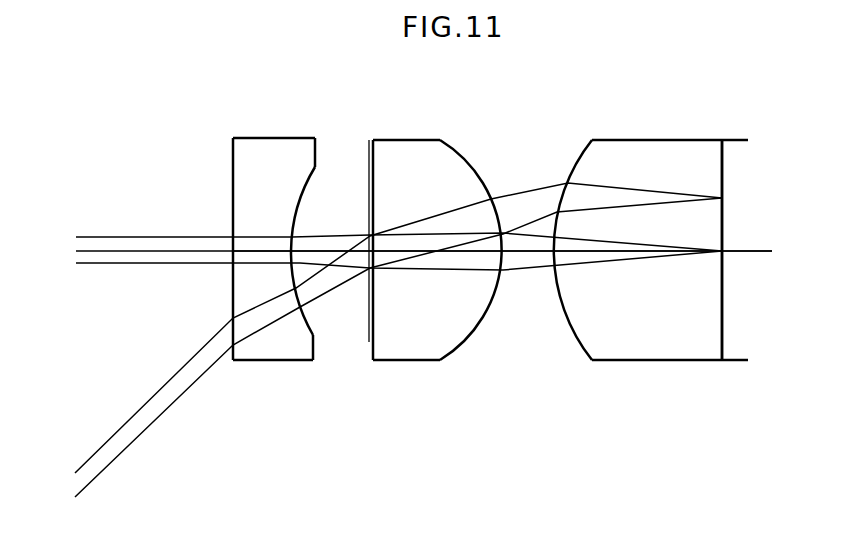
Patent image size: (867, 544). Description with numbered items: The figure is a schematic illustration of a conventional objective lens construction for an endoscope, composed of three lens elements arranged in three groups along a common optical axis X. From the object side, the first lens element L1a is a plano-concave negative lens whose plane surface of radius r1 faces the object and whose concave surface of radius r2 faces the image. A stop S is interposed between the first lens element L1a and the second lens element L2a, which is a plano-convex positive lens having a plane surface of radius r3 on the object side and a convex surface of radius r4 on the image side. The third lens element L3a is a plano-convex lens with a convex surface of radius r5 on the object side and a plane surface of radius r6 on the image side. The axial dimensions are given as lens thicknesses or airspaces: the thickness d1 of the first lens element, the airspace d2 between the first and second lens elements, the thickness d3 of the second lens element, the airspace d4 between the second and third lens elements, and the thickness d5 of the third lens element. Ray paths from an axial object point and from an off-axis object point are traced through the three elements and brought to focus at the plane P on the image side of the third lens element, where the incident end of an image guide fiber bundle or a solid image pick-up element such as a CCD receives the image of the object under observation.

The first lens element L1a is at (275, 249).
The stop S is at (368, 142).
The second lens element L2a is at (431, 249).
The third lens element L3a is at (642, 249).
The image plane / plate P is at (737, 139).
The optical axis X is at (744, 250).
The lens thickness d1 is at (263, 250).
The airspace d2 is at (331, 250).
The lens thickness d3 is at (403, 249).
The airspace d4 is at (533, 252).
The lens thickness d5 is at (617, 253).
The radius of curvature r1 is at (232, 359).
The radius of curvature r2 is at (314, 330).
The radius of curvature r3 is at (369, 342).
The radius of curvature r4 is at (470, 341).
The radius of curvature r5 is at (573, 338).
The radius of curvature r6 is at (722, 353).